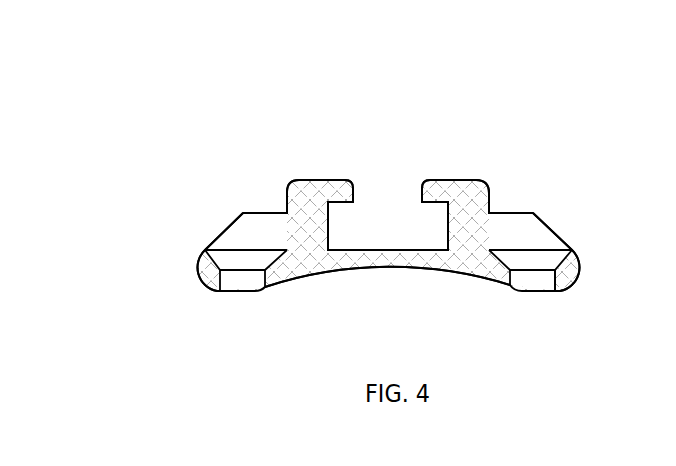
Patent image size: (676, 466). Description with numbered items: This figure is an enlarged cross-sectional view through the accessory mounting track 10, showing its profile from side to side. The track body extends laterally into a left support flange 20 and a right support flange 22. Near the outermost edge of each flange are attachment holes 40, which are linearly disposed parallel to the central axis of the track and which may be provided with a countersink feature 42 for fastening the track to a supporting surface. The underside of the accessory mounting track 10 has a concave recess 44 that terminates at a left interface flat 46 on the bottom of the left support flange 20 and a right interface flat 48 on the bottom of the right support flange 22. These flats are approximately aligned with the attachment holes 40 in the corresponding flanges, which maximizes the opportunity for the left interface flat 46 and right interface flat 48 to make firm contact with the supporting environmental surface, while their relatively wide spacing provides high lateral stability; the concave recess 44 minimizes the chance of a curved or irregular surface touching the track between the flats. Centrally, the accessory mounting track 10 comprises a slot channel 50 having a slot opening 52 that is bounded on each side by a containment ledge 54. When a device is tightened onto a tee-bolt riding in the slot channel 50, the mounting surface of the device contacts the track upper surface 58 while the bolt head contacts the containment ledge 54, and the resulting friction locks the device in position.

The accessory mounting track 10 is at (577, 132).
The left support flange 20 is at (292, 190).
The right support flange 22 is at (578, 280).
The attachment holes 40 is at (537, 285).
The countersink feature 42 is at (527, 253).
The concave recess 44 is at (285, 288).
The left interface flat 46 is at (219, 301).
The right interface flat 48 is at (559, 301).
The slot channel 50 is at (382, 229).
The slot opening 52 is at (379, 177).
The containment ledge 54 is at (449, 183).
The track upper surface 58 is at (434, 166).